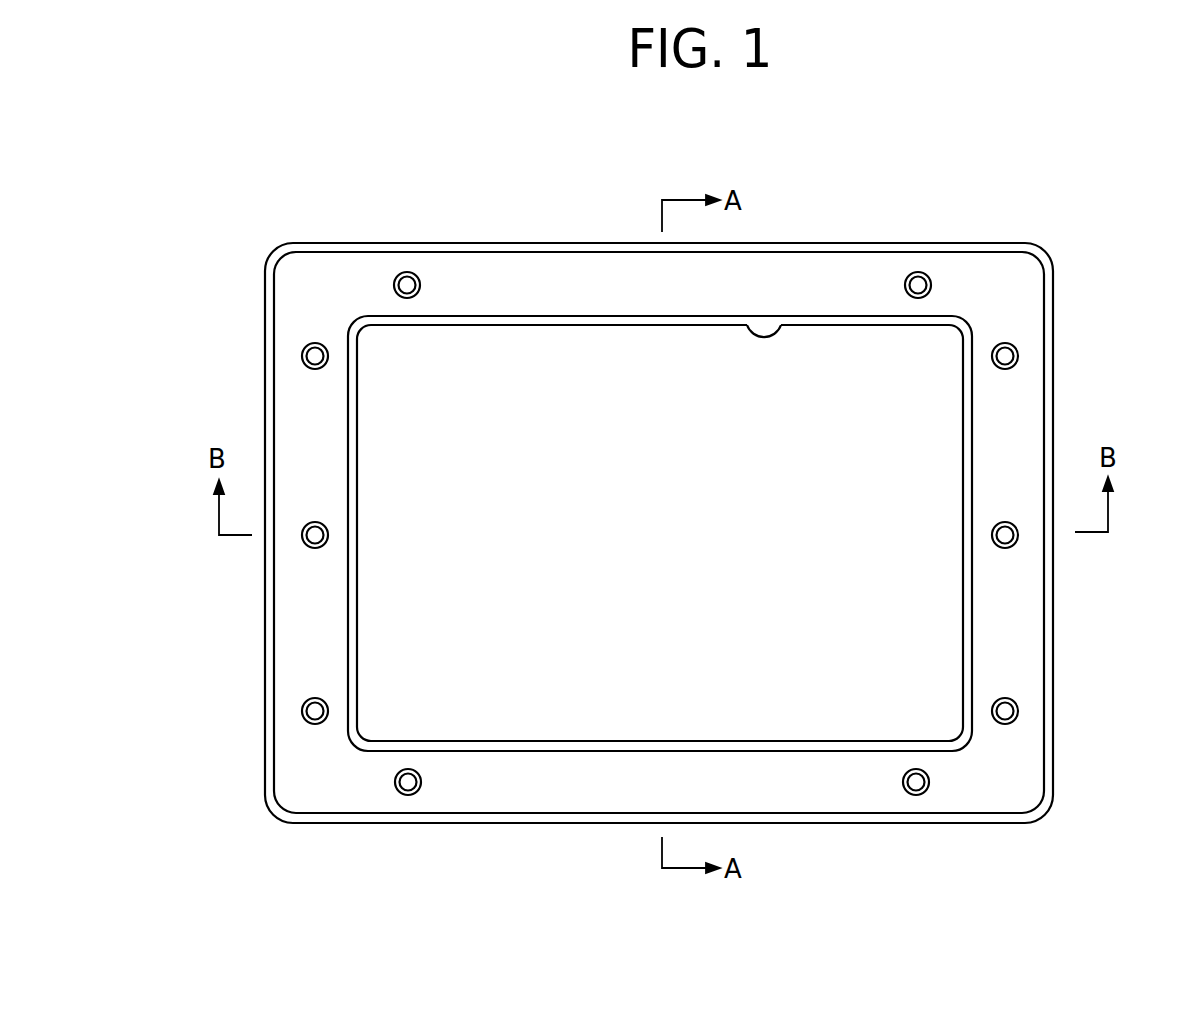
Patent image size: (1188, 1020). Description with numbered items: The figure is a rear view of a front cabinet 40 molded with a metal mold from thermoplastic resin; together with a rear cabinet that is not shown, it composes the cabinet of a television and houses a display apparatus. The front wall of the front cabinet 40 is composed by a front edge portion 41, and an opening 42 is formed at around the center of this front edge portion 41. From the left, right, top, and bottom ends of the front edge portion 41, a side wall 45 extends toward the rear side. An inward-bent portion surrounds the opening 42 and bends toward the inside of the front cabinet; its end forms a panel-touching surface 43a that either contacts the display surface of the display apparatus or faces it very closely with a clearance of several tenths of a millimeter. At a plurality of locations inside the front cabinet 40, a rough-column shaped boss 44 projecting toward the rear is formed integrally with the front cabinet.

The front cabinet 40 is at (945, 215).
The front edge portion 41 is at (1025, 430).
The opening 42 is at (781, 327).
The panel-touching surface 43a is at (797, 745).
The boss 44 is at (312, 548).
The side wall 45 is at (1055, 690).